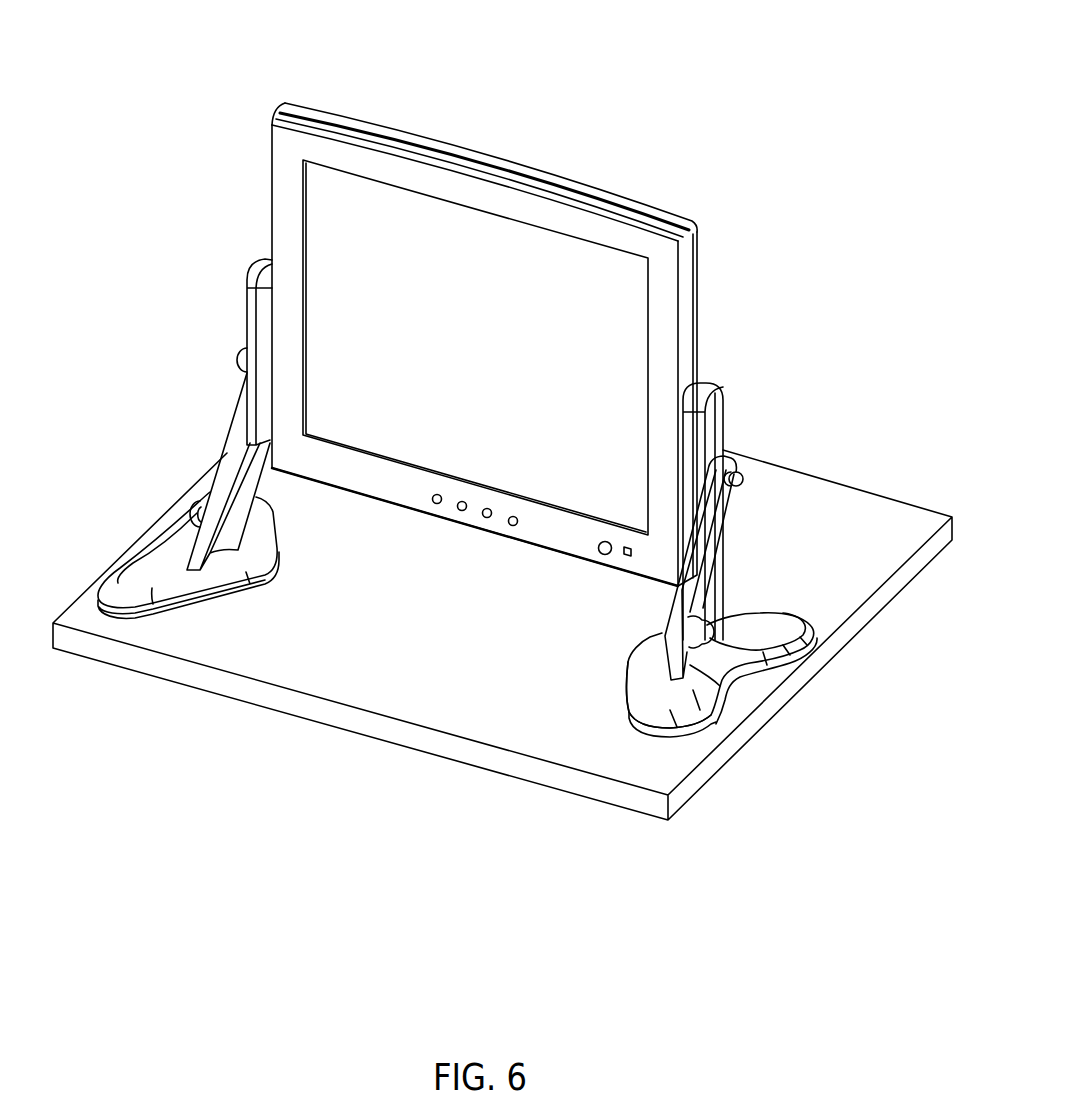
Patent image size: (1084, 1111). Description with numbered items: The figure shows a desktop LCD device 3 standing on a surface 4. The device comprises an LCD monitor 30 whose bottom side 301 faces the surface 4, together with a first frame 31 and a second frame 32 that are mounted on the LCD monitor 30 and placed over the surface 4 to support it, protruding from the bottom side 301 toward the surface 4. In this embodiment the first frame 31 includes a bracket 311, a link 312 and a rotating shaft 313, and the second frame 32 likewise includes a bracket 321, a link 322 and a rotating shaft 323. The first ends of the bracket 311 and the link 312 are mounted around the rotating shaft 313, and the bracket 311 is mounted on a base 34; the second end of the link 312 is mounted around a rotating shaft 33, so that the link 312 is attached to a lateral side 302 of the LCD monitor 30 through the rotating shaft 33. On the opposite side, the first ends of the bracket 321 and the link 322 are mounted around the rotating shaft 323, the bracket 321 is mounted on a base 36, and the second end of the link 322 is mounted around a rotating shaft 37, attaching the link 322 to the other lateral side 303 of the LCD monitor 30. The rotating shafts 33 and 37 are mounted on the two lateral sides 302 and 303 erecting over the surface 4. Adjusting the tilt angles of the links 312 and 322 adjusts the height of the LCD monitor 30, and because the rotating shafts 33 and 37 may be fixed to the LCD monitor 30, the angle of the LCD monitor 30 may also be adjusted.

The desktop LCD device 3 is at (491, 406).
The LCD monitor 30 is at (353, 233).
The bottom side 301 is at (476, 530).
The lateral side 302 is at (271, 252).
The lateral side 303 is at (688, 272).
The first frame 31 is at (167, 478).
The bracket 311 is at (146, 540).
The link 312 is at (225, 467).
The rotating shaft 313 is at (197, 505).
The second frame 32 is at (779, 597).
The bracket 321 is at (737, 686).
The link 322 is at (710, 585).
The rotating shaft 323 is at (693, 662).
The rotating shaft 33 is at (241, 362).
The base 34 is at (175, 595).
The base 36 is at (657, 718).
The rotating shaft 37 is at (743, 485).
The surface 4 is at (854, 477).